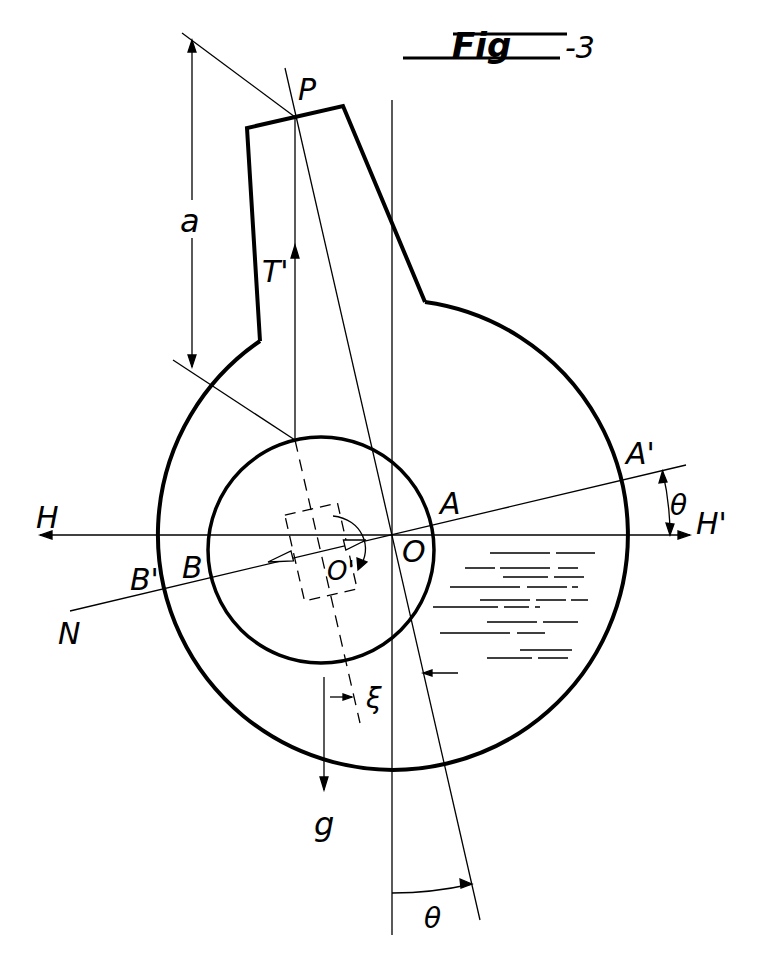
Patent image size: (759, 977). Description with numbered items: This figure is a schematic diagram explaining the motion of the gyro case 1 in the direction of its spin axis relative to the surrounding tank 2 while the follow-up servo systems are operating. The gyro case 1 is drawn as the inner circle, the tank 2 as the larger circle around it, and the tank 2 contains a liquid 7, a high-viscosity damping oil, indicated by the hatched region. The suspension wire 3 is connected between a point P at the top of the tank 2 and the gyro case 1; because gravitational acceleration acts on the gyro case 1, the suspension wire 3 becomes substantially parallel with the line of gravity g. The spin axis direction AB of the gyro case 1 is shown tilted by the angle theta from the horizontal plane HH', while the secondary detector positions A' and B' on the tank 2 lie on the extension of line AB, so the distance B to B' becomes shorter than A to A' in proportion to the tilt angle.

The gyro case 1 is at (225, 490).
The tank 2 is at (578, 388).
The suspension wire 3 is at (297, 182).
The liquid 7 is at (553, 688).